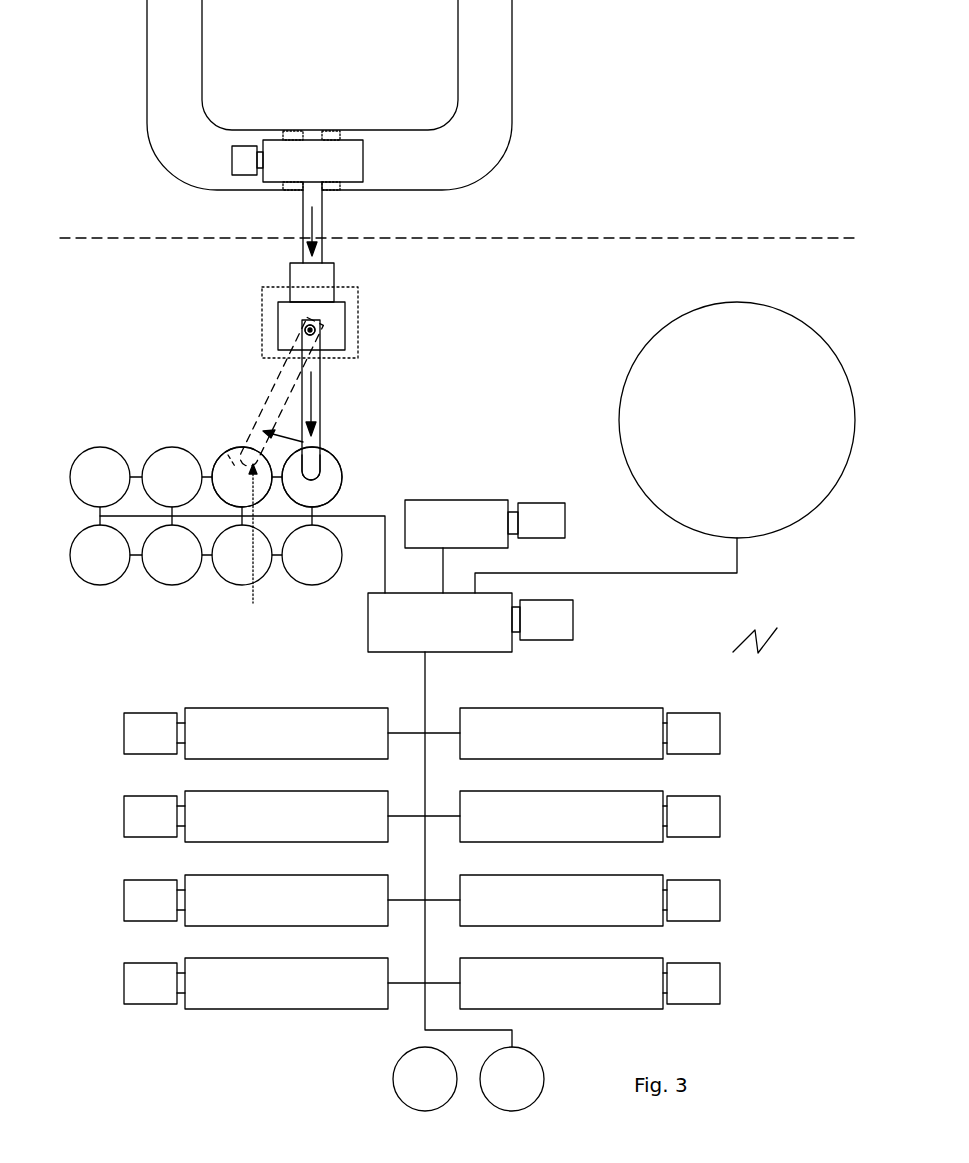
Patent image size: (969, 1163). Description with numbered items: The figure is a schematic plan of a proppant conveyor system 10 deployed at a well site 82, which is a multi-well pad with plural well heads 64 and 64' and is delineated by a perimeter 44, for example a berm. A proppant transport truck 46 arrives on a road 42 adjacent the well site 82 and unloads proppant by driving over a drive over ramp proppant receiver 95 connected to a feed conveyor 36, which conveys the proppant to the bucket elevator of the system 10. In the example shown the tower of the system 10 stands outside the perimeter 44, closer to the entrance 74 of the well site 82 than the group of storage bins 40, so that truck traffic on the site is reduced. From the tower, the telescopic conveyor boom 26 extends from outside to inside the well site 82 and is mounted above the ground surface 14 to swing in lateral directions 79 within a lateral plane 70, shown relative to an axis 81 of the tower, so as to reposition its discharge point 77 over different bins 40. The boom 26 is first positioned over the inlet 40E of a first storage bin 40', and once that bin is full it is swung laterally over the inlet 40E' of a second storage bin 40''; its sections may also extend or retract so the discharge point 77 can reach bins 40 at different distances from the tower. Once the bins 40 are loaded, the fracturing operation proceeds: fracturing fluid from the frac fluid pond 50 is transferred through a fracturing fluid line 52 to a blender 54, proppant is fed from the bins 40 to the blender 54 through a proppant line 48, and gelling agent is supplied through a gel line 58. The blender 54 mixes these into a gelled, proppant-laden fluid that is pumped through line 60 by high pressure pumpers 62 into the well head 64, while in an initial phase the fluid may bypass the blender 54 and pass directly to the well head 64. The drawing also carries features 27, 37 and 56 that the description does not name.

The proppant conveyor system 10 is at (380, 337).
The ground surface 14 is at (131, 338).
The telescopic conveyor boom 26 is at (275, 383).
The arm movement direction 27 is at (315, 395).
The feed conveyor 36 is at (322, 203).
The flow direction 37 is at (308, 212).
The storage bins 40 is at (206, 539).
The first storage bin 40' is at (346, 477).
The second storage bin 40'' is at (225, 453).
The inlet 40E is at (368, 441).
The inlet of second storage bin 40E' is at (153, 442).
The road 42 is at (512, 63).
The perimeter 44 is at (580, 238).
The proppant transport truck 46 is at (323, 147).
The proppant line 48 is at (343, 512).
The frac fluid pond 50 is at (680, 315).
The fracturing fluid line 52 is at (625, 573).
The blender 54 is at (512, 652).
The pump unit 56 is at (458, 500).
The gel line 58 is at (440, 557).
The line 60 is at (425, 699).
The high pressure pumpers 62 is at (238, 708).
The well head 64 is at (397, 1077).
The second well head 64' is at (539, 1072).
The lateral plane 70 is at (262, 318).
The entrance 74 is at (333, 250).
The discharge point 77 is at (256, 549).
The lateral directions 79 is at (303, 440).
The axis of the tower 81 is at (305, 330).
The well site 82 is at (770, 629).
The drive over ramp proppant receiver 95 is at (333, 138).